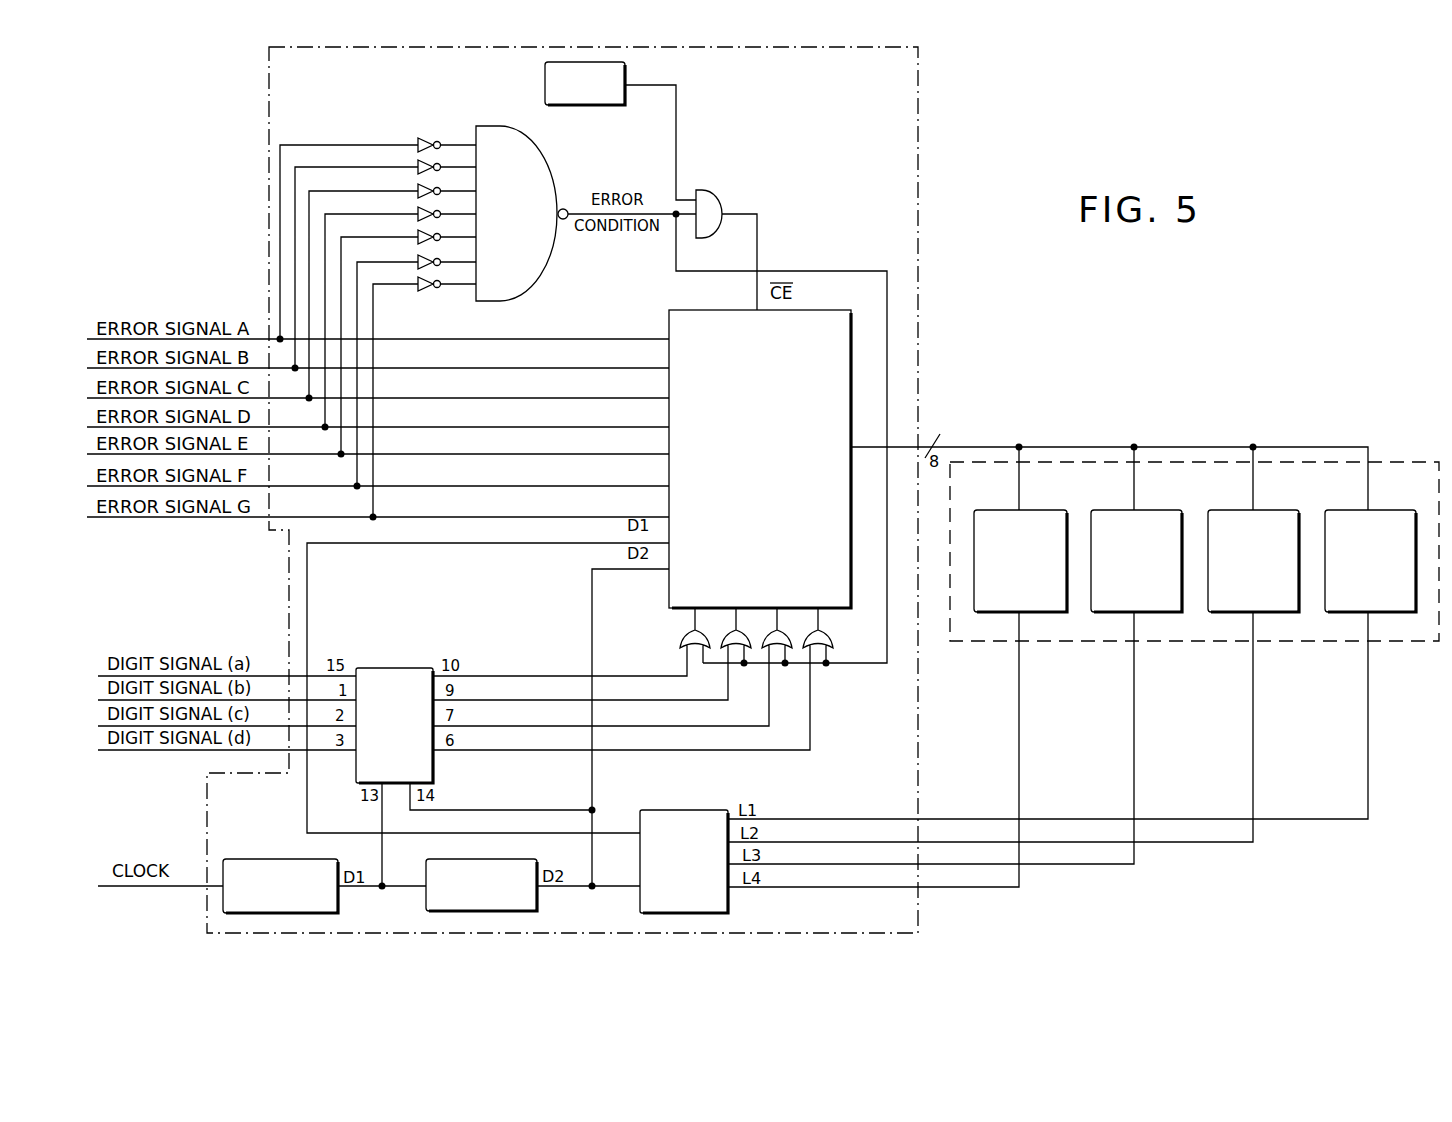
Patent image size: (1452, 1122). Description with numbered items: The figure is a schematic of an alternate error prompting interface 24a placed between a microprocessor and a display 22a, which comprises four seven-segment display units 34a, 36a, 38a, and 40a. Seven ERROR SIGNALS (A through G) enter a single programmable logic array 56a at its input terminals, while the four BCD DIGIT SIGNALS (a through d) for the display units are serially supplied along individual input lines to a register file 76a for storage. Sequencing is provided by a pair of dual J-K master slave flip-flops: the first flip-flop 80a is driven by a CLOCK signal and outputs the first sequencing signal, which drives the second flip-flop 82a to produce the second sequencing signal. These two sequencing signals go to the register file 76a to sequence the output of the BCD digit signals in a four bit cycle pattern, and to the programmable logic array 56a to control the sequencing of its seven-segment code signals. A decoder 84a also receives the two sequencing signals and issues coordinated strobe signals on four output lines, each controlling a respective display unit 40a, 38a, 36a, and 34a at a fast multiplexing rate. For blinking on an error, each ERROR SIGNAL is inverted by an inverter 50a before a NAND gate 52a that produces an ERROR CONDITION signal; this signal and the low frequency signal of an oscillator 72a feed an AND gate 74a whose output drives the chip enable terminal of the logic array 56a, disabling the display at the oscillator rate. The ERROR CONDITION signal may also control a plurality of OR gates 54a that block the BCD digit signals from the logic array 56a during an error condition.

The display 22a is at (1402, 458).
The interface 24a is at (262, 152).
The seven-segment display unit 34a is at (990, 492).
The seven-segment display unit 36a is at (1128, 492).
The seven-segment display unit 38a is at (1242, 510).
The seven-segment display unit 40a is at (1356, 492).
The inverter 50a is at (417, 141).
The NAND gate 52a is at (552, 183).
The OR gate 54a is at (836, 627).
The programmable logic array 56a is at (782, 475).
The oscillator 72a is at (620, 131).
The AND gate 74a is at (717, 199).
The register file 76a is at (397, 668).
The first flip-flop 80a is at (280, 859).
The second flip-flop 82a is at (453, 859).
The decoder 84a is at (683, 810).